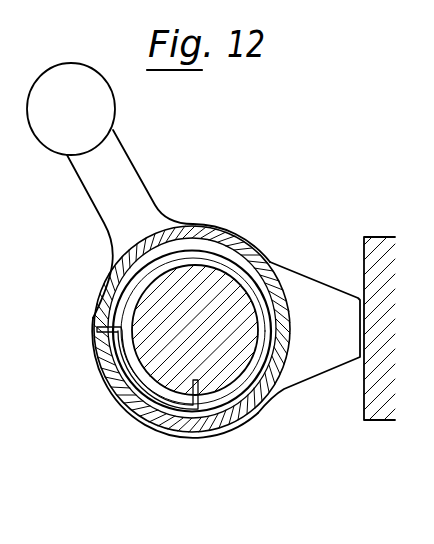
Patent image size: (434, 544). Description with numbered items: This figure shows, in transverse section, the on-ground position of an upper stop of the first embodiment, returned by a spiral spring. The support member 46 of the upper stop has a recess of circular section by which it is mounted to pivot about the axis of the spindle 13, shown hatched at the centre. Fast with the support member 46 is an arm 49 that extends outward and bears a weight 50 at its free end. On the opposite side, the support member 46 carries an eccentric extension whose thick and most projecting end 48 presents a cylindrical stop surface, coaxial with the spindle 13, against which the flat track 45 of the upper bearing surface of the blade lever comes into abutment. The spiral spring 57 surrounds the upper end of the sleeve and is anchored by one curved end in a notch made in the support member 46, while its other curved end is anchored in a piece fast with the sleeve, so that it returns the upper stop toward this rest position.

The spindle 13 is at (160, 339).
The track 45 is at (363, 270).
The support member 46 is at (249, 250).
The thick and most projecting end 48 is at (352, 330).
The arm 49 is at (138, 203).
The weight 50 is at (93, 105).
The spiral spring 57 is at (242, 399).